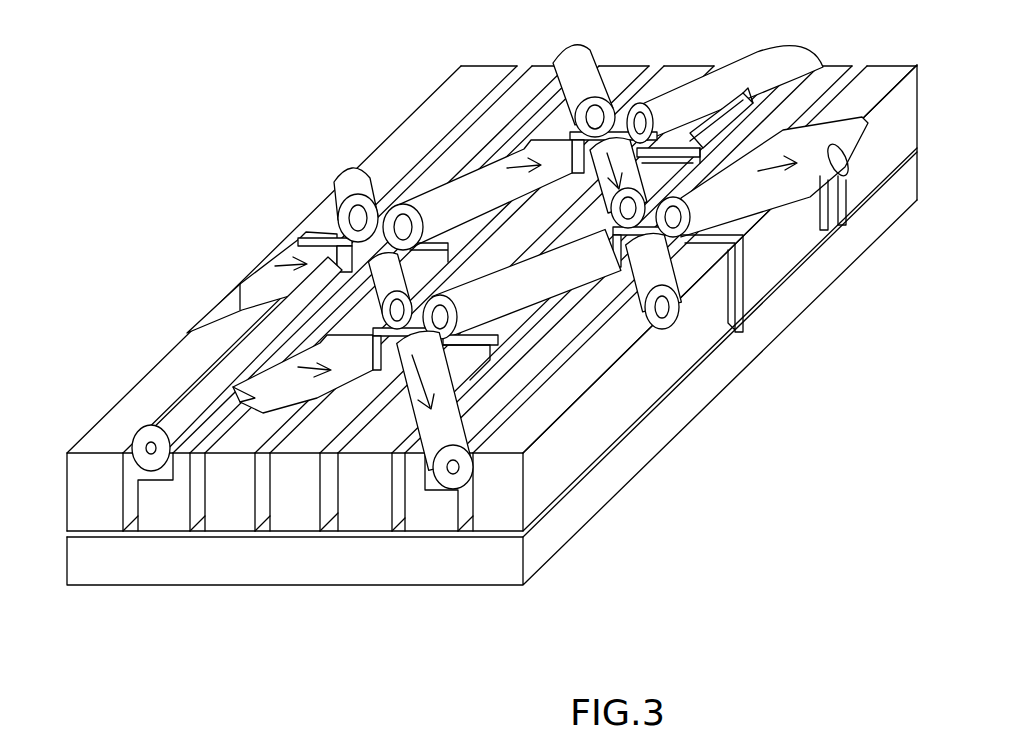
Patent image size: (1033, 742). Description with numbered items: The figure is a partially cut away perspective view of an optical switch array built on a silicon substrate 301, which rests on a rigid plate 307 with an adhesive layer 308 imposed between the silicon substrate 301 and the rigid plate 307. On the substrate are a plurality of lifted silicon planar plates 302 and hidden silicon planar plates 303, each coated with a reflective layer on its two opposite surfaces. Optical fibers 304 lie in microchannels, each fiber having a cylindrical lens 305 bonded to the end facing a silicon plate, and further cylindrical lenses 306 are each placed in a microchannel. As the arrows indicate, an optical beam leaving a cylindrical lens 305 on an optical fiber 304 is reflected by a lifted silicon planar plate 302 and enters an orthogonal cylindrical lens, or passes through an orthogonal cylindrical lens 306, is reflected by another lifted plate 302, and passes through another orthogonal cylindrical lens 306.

The silicon substrate 301 is at (806, 305).
The lifted silicon planar plate 302 is at (558, 135).
The hidden silicon planar plate 303 is at (327, 207).
The optical fiber 304 is at (200, 410).
The cylindrical lens 305 is at (268, 275).
The cylindrical lens 306 is at (460, 186).
The rigid plate 307 is at (588, 500).
The adhesive layer 308 is at (667, 390).